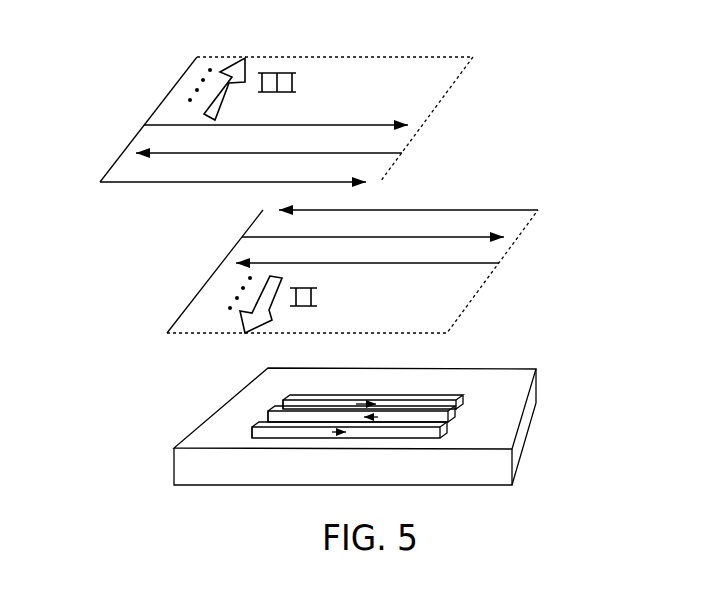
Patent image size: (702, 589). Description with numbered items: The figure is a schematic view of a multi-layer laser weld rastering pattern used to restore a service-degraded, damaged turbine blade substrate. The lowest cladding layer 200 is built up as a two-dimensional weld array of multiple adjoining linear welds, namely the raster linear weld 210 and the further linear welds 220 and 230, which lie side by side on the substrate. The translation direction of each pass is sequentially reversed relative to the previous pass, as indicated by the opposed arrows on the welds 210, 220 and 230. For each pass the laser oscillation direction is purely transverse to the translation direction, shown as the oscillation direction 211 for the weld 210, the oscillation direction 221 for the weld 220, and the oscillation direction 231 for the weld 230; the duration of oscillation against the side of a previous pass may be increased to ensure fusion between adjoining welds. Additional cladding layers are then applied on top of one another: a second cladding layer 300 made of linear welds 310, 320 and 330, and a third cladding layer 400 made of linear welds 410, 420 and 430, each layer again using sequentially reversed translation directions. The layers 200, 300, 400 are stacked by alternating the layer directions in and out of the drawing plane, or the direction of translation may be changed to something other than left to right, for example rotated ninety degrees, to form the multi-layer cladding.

The cladding layer 200 is at (388, 416).
The raster linear weld 210 is at (380, 432).
The linear weld 220 is at (442, 417).
The linear weld 230 is at (447, 405).
The oscillation direction 211 is at (244, 434).
The oscillation direction 221 is at (262, 417).
The oscillation direction 231 is at (281, 400).
The cladding layer 300 is at (363, 266).
The linear weld 310 is at (538, 210).
The linear weld 320 is at (518, 237).
The linear weld 330 is at (499, 263).
The cladding layer 400 is at (281, 107).
The linear weld 410 is at (380, 182).
The linear weld 420 is at (402, 153).
The linear weld 430 is at (422, 125).